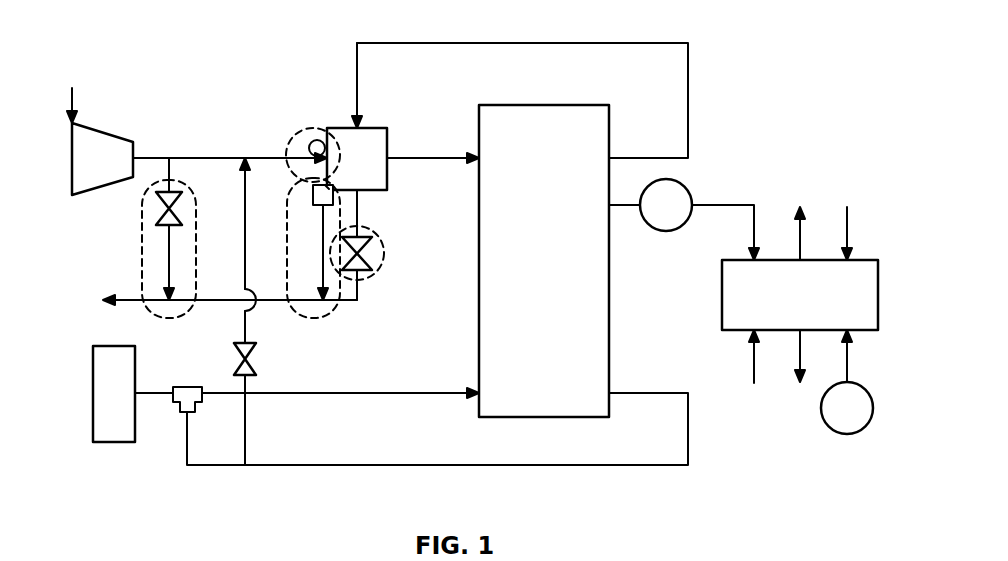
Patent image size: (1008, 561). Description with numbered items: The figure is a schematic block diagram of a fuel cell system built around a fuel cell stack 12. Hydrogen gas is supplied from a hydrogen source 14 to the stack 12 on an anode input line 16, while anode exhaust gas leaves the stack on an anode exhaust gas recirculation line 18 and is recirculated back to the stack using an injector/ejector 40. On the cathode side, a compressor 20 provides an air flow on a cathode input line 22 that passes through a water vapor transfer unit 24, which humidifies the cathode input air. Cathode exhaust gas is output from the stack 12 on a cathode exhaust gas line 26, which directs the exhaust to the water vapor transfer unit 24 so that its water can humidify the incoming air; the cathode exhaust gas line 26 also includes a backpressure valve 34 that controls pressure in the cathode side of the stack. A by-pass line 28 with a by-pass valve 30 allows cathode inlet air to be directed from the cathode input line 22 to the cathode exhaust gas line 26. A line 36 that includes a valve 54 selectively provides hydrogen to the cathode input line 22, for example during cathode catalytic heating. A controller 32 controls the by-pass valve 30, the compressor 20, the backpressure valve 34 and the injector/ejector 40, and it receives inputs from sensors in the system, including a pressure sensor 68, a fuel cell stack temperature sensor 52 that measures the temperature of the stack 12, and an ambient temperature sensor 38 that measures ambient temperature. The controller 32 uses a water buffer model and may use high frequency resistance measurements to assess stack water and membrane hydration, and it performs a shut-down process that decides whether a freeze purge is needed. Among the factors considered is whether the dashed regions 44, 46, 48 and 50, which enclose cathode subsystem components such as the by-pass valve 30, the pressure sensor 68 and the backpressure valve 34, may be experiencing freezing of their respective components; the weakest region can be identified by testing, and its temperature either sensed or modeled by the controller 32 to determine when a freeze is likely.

The fuel cell stack 12 is at (590, 105).
The hydrogen source 14 is at (110, 442).
The anode input line 16 is at (405, 393).
The anode exhaust gas recirculation line 18 is at (465, 465).
The compressor 20 is at (103, 128).
The cathode input line 22 is at (190, 158).
The water vapor transfer unit 24 is at (372, 128).
The cathode exhaust gas line 26 is at (688, 85).
The by-pass line 28 is at (170, 250).
The by-pass valve 30 is at (155, 205).
The controller 32 is at (722, 295).
The backpressure valve 34 is at (370, 250).
The line 36 is at (250, 325).
The ambient temperature sensor 38 is at (830, 430).
The injector/ejector 40 is at (175, 405).
The region 44 is at (142, 240).
The region 46 is at (307, 132).
The region 48 is at (318, 318).
The region 50 is at (377, 230).
The fuel cell stack temperature sensor 52 is at (685, 183).
The valve 54 is at (258, 370).
The pressure sensor 68 is at (318, 127).